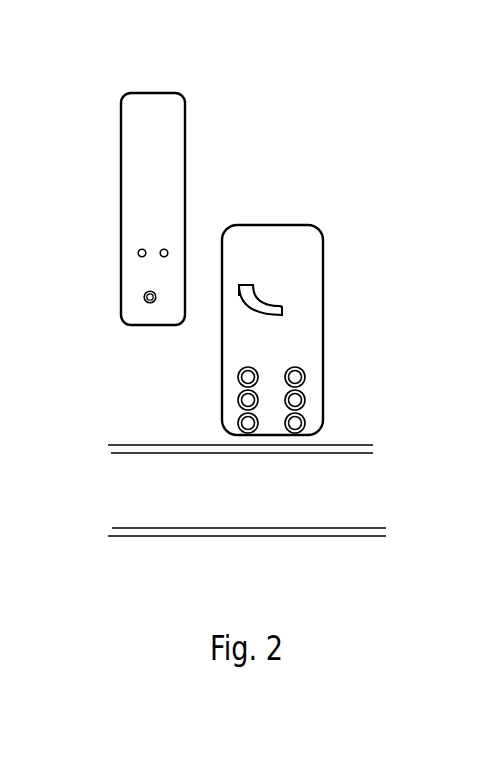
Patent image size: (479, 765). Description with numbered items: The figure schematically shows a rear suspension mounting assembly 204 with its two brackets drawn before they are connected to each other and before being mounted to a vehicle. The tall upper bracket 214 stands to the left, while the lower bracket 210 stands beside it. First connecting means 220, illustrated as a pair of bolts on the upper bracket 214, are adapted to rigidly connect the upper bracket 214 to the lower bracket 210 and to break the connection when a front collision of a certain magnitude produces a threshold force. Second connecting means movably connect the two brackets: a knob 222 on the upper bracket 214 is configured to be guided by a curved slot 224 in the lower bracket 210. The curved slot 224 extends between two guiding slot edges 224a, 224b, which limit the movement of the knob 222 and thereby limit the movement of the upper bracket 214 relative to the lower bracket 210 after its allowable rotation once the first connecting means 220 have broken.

The rear suspension mounting assembly 204 is at (347, 181).
The lower bracket 210 is at (240, 350).
The upper bracket 214 is at (163, 160).
The first connecting means 220 is at (167, 249).
The knob 222 is at (149, 303).
The curved slot 224 is at (263, 302).
The guiding slot edge 224a is at (282, 310).
The guiding slot edge 224b is at (240, 285).